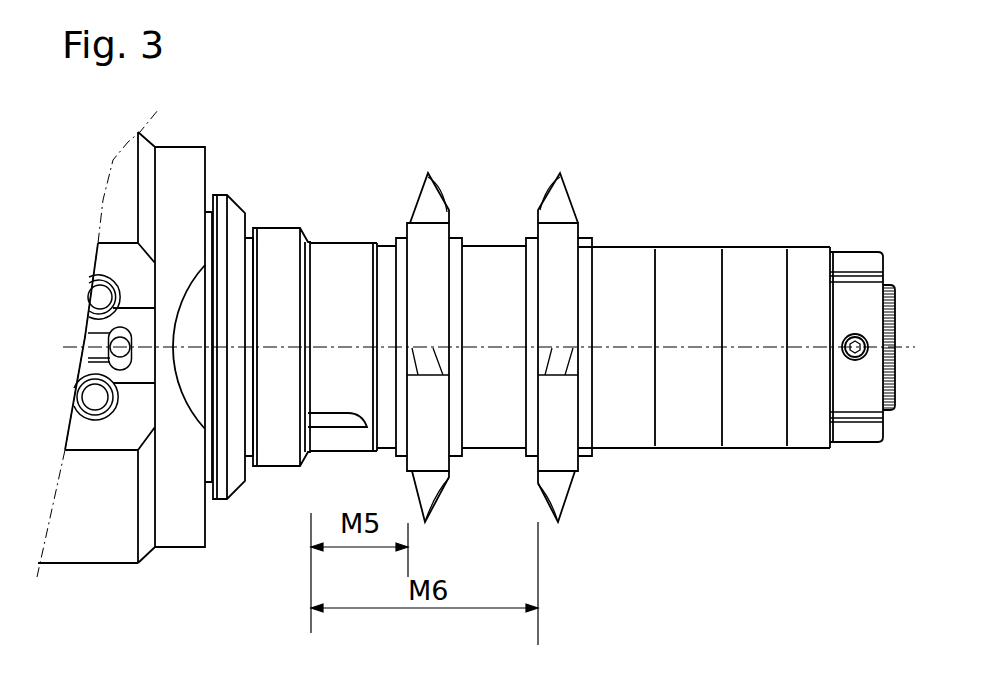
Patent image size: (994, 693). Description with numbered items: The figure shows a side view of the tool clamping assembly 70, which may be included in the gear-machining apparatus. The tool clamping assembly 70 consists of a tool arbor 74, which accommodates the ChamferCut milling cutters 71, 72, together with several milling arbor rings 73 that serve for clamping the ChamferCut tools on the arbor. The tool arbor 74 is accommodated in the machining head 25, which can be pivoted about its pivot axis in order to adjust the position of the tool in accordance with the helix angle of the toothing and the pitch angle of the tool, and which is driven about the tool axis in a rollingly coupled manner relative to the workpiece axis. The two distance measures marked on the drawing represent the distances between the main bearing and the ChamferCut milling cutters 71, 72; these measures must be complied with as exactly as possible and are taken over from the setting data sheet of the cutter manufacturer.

The machining head 25 is at (183, 162).
The tool clamping assembly 70 is at (705, 175).
The ChamferCut milling cutter 71 is at (432, 194).
The ChamferCut milling cutter 72 is at (557, 203).
The milling arbor rings 73 is at (678, 410).
The tool arbor 74 is at (848, 392).